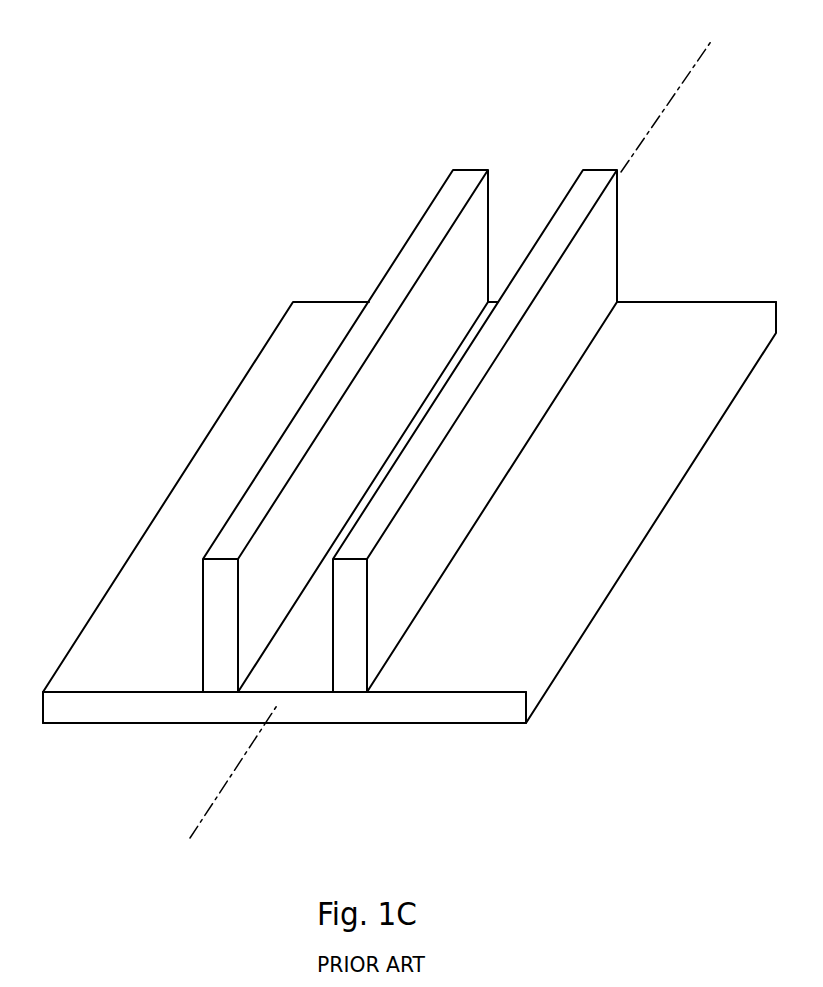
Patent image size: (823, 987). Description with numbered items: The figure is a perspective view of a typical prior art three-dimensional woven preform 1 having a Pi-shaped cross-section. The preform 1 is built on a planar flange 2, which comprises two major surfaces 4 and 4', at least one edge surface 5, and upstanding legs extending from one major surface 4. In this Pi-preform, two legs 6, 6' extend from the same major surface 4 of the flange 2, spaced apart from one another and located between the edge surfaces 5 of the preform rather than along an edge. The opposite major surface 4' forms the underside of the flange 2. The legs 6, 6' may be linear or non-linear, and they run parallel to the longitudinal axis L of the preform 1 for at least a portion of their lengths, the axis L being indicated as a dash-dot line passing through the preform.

The 3D woven preform 1 is at (241, 219).
The planar flange 2 is at (738, 310).
The major surface 4 is at (409, 497).
The major surface 4' is at (284, 758).
The edge surface 5 is at (122, 708).
The leg 6 is at (345, 394).
The leg 6' is at (475, 399).
The longitudinal axis L is at (451, 434).